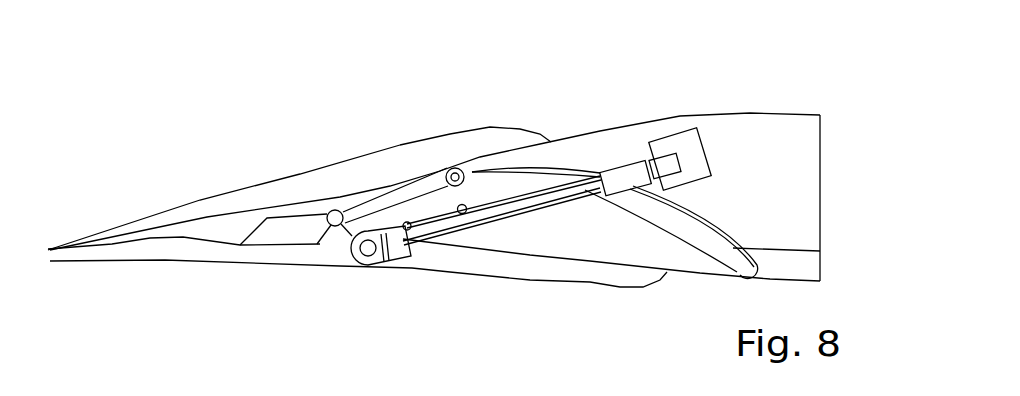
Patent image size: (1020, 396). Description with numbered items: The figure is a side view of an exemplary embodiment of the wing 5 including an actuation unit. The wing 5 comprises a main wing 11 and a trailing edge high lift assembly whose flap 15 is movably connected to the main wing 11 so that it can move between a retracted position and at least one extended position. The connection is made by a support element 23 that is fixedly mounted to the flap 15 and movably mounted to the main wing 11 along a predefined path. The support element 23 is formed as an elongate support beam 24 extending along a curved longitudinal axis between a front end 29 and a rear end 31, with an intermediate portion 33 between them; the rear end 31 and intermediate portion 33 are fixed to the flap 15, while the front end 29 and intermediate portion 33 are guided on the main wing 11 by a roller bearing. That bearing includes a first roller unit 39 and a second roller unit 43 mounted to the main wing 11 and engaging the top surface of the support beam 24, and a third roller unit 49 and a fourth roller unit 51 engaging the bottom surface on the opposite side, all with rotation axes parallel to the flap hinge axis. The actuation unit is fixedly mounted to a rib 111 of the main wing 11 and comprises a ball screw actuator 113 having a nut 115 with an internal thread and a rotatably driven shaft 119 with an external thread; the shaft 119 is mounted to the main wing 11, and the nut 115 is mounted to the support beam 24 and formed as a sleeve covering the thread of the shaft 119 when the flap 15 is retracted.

The wing 5 is at (245, 100).
The main wing 11 is at (800, 205).
The flap 15 is at (240, 200).
The support element 23 is at (711, 222).
The support beam 24 is at (760, 196).
The front end 29 is at (820, 251).
The rear end 31 is at (366, 222).
The intermediate portion 33 is at (540, 172).
The first roller unit 39 is at (331, 211).
The second roller unit 43 is at (454, 168).
The third roller unit 49 is at (404, 226).
The fourth roller unit 51 is at (466, 205).
The rib 111 is at (612, 147).
The ball screw actuator 113 is at (487, 219).
The nut 115 is at (585, 185).
The shaft 119 is at (667, 158).